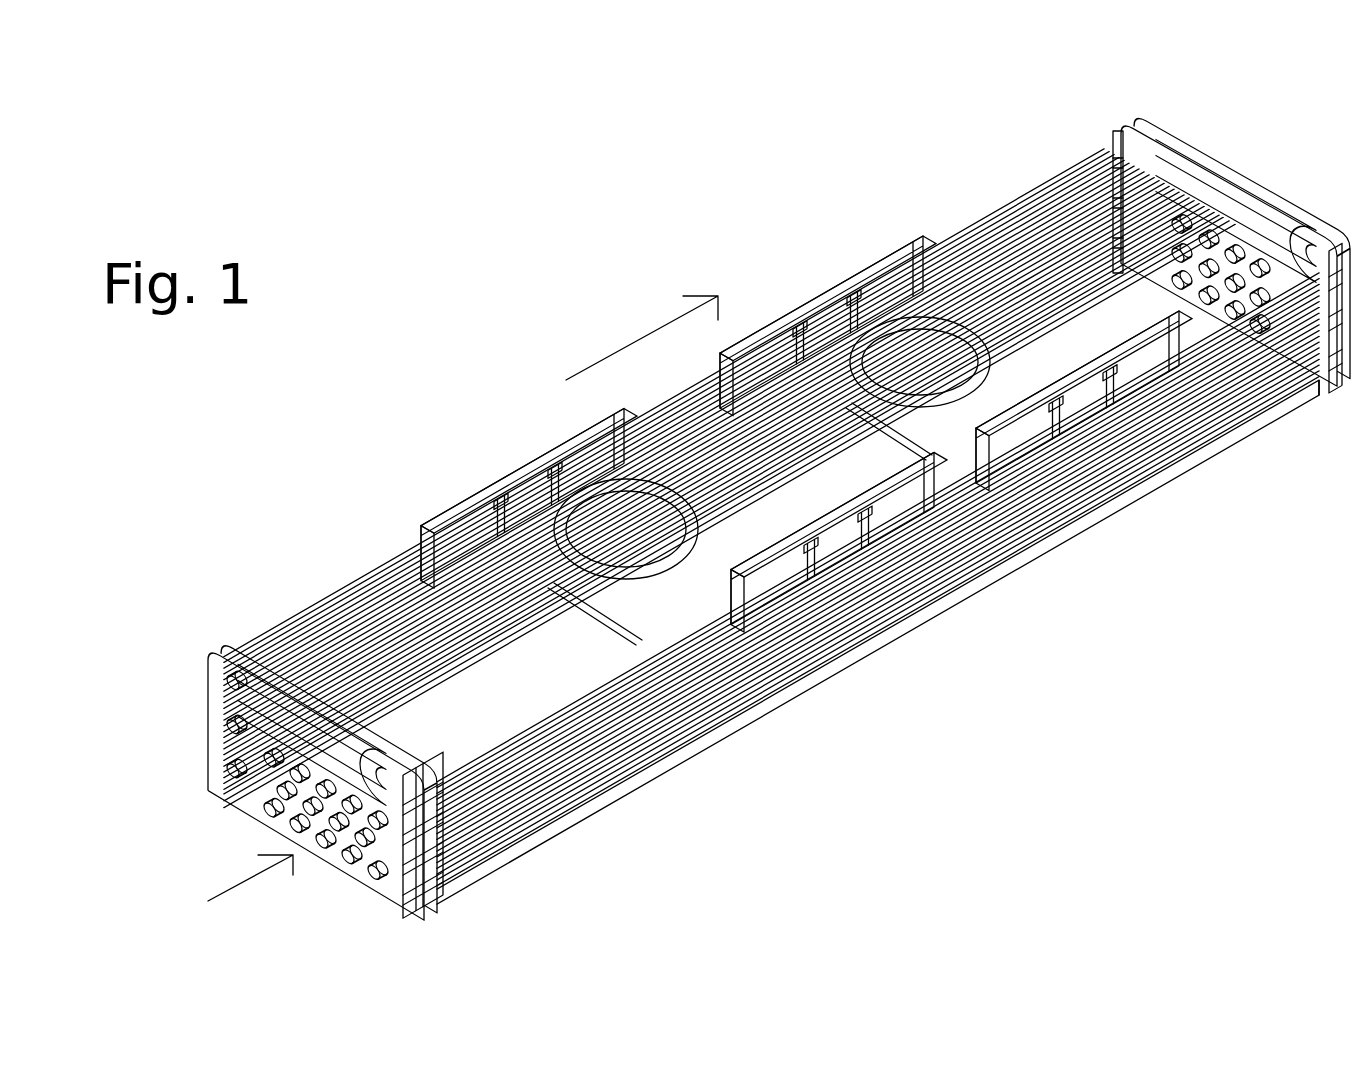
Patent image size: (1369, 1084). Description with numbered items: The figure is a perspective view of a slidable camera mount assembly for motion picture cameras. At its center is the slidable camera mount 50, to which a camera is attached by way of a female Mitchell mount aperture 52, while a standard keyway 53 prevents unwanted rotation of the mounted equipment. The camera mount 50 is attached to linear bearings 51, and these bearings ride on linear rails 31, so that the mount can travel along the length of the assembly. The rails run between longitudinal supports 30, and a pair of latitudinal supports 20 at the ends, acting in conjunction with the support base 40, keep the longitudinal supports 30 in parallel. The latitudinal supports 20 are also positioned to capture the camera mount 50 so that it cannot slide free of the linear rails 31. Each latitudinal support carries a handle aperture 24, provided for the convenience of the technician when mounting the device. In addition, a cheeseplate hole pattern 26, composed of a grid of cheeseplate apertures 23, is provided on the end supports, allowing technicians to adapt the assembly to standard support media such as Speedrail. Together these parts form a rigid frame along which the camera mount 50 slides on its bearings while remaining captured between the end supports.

The latitudinal supports 20 is at (233, 690).
The cheeseplate apertures 23 is at (360, 862).
The handle aperture 24 is at (215, 733).
The cheeseplate hole pattern 26 is at (225, 891).
The longitudinal supports 30 is at (350, 687).
The linear rails 31 is at (520, 690).
The support base 40 is at (887, 650).
The slidable camera mount 50 is at (525, 470).
The linear bearings 51 is at (800, 560).
The female Mitchell mount aperture 52 is at (577, 458).
The keyway 53 is at (642, 338).